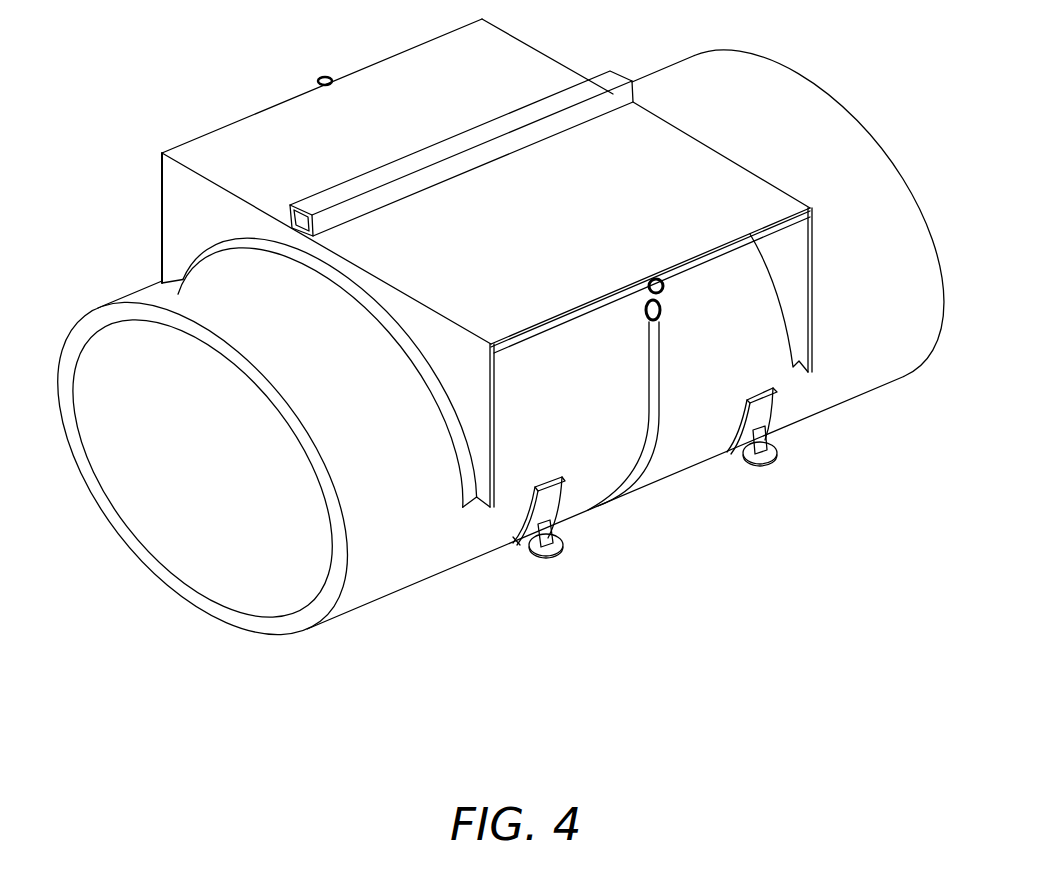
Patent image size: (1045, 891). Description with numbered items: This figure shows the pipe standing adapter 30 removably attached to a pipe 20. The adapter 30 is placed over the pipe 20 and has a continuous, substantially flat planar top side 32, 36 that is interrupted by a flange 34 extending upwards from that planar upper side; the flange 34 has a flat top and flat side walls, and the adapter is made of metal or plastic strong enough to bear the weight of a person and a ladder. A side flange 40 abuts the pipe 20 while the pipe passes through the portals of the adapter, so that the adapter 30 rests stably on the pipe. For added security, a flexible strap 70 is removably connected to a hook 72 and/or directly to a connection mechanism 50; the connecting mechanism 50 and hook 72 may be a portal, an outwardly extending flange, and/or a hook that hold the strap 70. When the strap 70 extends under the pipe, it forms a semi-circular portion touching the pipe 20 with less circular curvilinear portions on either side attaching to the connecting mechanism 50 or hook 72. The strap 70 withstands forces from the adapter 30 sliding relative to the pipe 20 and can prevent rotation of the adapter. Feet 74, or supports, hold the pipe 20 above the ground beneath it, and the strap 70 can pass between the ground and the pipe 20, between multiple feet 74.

The pipe 20 is at (163, 298).
The pipe standing adapter 30 is at (458, 253).
The top side 32 is at (382, 73).
The flange 34 is at (588, 88).
The top side 36 is at (665, 140).
The side flange 40 is at (283, 253).
The connection mechanism 50 is at (658, 280).
The flexible strap 70 is at (645, 455).
The hook 72 is at (660, 313).
The feet 74 is at (760, 437).